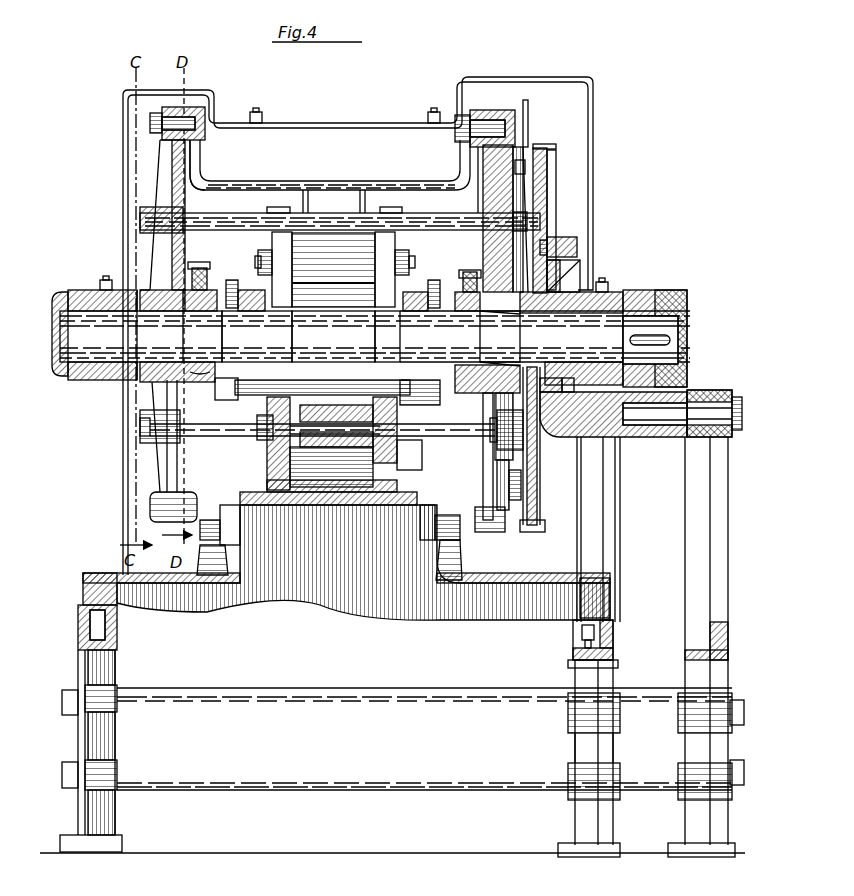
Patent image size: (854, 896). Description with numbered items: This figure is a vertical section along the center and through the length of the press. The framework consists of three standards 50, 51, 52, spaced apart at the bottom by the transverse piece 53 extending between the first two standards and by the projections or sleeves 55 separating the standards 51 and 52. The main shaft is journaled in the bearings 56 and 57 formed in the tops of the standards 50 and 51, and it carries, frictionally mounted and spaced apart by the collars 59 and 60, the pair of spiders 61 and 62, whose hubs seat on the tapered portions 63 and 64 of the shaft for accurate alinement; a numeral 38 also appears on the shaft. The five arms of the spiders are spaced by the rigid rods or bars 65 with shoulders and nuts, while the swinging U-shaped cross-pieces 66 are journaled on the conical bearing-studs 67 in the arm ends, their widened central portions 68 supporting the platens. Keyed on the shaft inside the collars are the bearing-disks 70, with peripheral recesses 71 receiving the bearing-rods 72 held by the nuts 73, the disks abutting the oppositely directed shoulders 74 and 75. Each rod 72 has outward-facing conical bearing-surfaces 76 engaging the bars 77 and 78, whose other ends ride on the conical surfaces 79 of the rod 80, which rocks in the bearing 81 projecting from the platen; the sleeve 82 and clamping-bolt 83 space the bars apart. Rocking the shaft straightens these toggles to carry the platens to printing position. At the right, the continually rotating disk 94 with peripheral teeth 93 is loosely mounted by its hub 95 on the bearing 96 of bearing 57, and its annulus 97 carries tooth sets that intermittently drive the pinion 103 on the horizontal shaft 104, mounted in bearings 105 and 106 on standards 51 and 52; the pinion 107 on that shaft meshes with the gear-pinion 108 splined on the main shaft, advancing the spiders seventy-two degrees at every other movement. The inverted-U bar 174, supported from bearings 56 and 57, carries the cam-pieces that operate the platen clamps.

The gear 38 is at (333, 297).
The standard 50 is at (80, 558).
The standard 51 is at (578, 676).
The standard 52 is at (690, 636).
The transverse piece 53 is at (424, 739).
The projections or sleeves 55 is at (665, 700).
The bearing 56 is at (78, 290).
The bearing 57 is at (622, 292).
The collar 59 is at (210, 288).
The collar 60 is at (465, 283).
The spider 61 is at (165, 179).
The spider 62 is at (560, 178).
The tapered portion 63 is at (141, 335).
The tapered portion 64 is at (491, 316).
The rods or bars 65 is at (234, 226).
The platen-bearing cross-piece 66 is at (230, 186).
The conical bearing-stud 67 is at (196, 118).
The widened central portion 68 is at (339, 200).
The bearing plate or disk 70 is at (248, 290).
The recess 71 is at (250, 412).
The bearing-rod 72 is at (337, 389).
The nut 73 is at (222, 384).
The shoulder 74 is at (257, 297).
The shoulder 75 is at (387, 297).
The conical bearing-surface 76 is at (320, 442).
The bar or plate 77 is at (268, 466).
The bar or plate 78 is at (400, 452).
The conical bearing-surface 79 is at (390, 488).
The bearing-rod 80 is at (331, 467).
The bearing 81 is at (262, 453).
The sleeve 82 is at (345, 424).
The clamping-bolt 83 is at (405, 412).
The peripheral gear-teeth 93 is at (546, 150).
The wheel or disk 94 is at (556, 205).
The hub 95 is at (575, 270).
The bearing 96 is at (585, 290).
The annulus 97 is at (570, 240).
The gear-pinion 103 is at (572, 440).
The horizontal shaft 104 is at (612, 445).
The bearing 105 is at (612, 480).
The bearing 106 is at (712, 392).
The pinion 107 is at (625, 432).
The gear-pinion 108 is at (680, 296).
The bar 174 is at (338, 124).